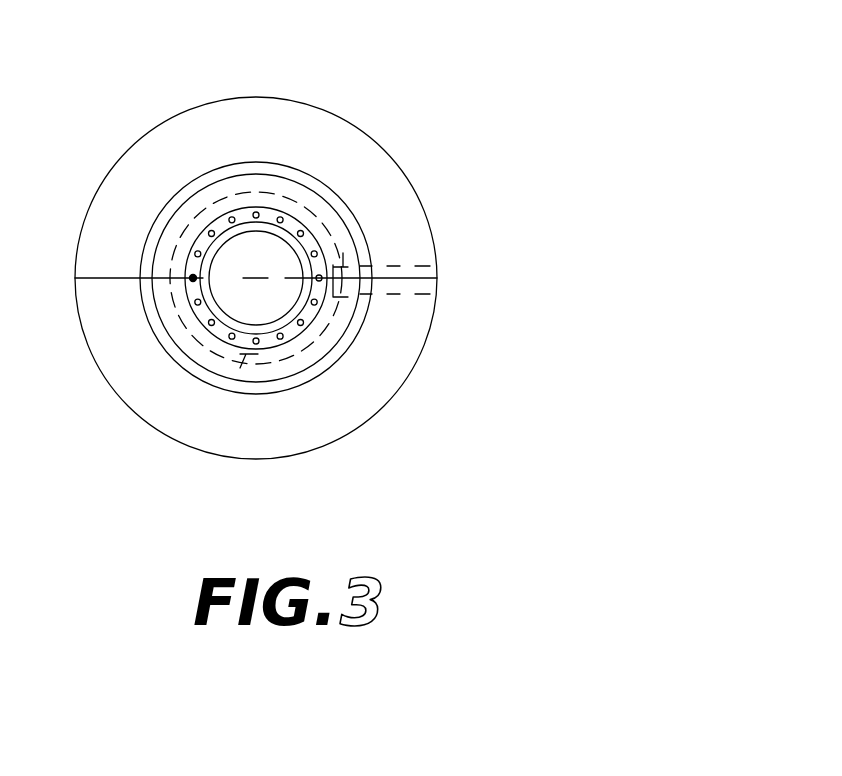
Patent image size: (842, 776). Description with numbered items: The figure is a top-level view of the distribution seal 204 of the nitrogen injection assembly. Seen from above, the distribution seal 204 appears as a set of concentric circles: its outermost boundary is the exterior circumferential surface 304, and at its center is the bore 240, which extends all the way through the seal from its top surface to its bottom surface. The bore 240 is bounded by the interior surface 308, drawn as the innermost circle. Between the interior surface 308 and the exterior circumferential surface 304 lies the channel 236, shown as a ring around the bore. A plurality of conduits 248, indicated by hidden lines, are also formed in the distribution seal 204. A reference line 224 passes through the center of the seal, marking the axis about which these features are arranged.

The distribution seal 204 is at (612, 94).
The exterior circumferential surface 304 is at (407, 175).
The channel 236 is at (305, 252).
The bore 240 is at (234, 312).
The interior surface 308 is at (283, 241).
The central axis 224 is at (438, 279).
The conduits 248 is at (246, 355).